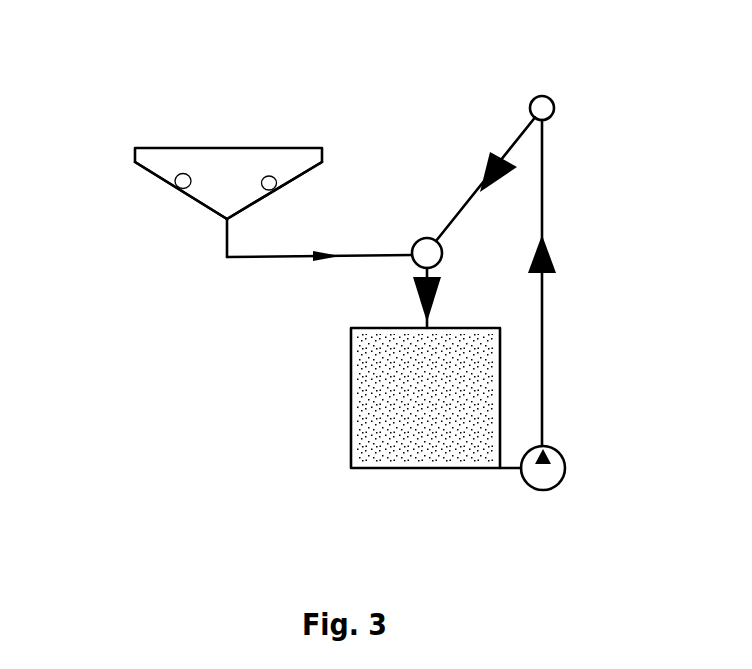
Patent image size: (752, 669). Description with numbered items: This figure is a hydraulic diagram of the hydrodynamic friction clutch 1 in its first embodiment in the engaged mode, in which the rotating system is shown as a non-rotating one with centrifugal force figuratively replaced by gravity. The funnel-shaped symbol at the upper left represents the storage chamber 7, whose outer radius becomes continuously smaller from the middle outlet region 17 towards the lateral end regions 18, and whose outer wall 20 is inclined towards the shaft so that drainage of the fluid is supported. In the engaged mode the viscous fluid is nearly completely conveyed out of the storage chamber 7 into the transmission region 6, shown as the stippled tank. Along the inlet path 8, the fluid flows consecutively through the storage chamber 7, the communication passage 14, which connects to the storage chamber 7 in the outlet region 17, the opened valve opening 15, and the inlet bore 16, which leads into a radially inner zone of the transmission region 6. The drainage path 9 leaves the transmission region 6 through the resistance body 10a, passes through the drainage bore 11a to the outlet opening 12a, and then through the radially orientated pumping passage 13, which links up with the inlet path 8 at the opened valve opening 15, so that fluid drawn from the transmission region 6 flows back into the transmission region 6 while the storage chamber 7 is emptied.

The hydrodynamic friction clutch 1 is at (636, 107).
The transmission region 6 is at (402, 447).
The storage chamber 7 is at (202, 173).
The inlet path 8 is at (266, 305).
The drainage path 9 is at (572, 228).
The resistance body 10a is at (566, 476).
The drainage bore 11a is at (545, 372).
The outlet opening 12a is at (546, 95).
The pumping passage 13 is at (514, 147).
The communication passage 14 is at (249, 258).
The valve opening 15 is at (428, 238).
The inlet bore 16 is at (410, 280).
The outlet region 17 is at (214, 232).
The end regions 18 is at (130, 181).
The outer wall 20 is at (178, 188).